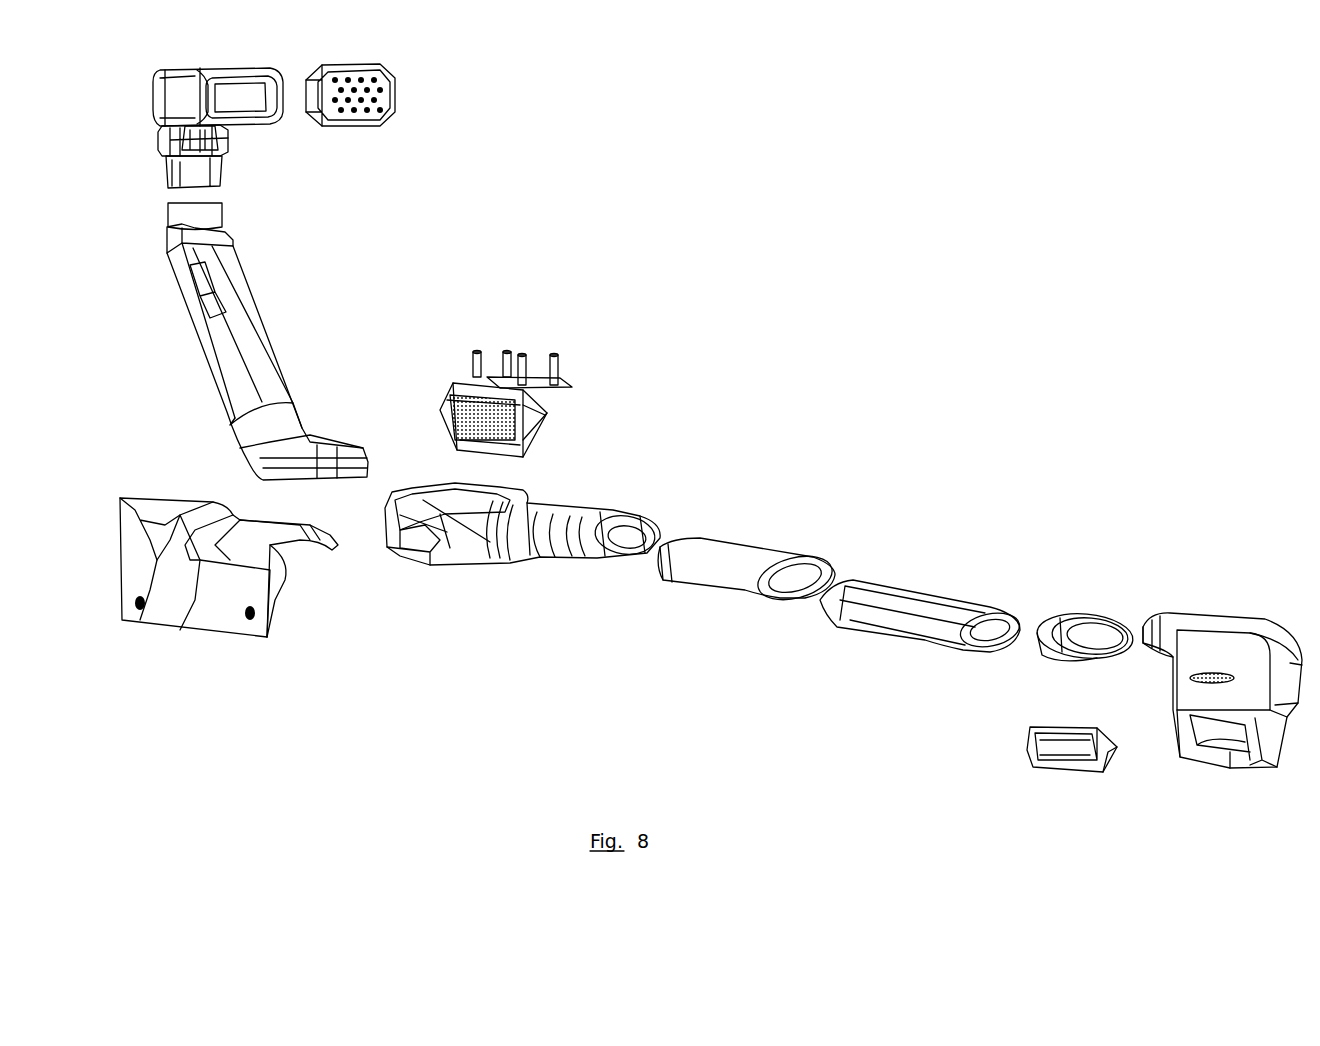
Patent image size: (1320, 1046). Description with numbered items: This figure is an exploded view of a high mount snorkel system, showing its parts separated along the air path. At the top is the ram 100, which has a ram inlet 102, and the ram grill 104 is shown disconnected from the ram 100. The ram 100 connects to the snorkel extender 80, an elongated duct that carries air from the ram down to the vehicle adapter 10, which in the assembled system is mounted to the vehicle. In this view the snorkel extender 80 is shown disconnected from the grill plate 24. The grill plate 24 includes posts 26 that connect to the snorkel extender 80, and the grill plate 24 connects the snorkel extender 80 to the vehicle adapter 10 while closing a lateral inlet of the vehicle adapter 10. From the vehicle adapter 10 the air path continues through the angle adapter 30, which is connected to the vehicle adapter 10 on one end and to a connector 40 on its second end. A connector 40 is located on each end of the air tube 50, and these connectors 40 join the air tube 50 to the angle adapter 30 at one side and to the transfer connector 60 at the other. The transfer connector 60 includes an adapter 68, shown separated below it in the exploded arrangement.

The vehicle adapter 10 is at (255, 667).
The grill plate 24 is at (563, 415).
The posts 26 is at (561, 370).
The angle adapter 30 is at (448, 592).
The connector 40 is at (759, 518).
The air tube 50 is at (959, 532).
The transfer connector 60 is at (1229, 588).
The adapter 68 is at (1012, 760).
The snorkel extender 80 is at (215, 345).
The ram 100 is at (222, 152).
The ram inlet 102 is at (275, 130).
The ram grill 104 is at (395, 94).